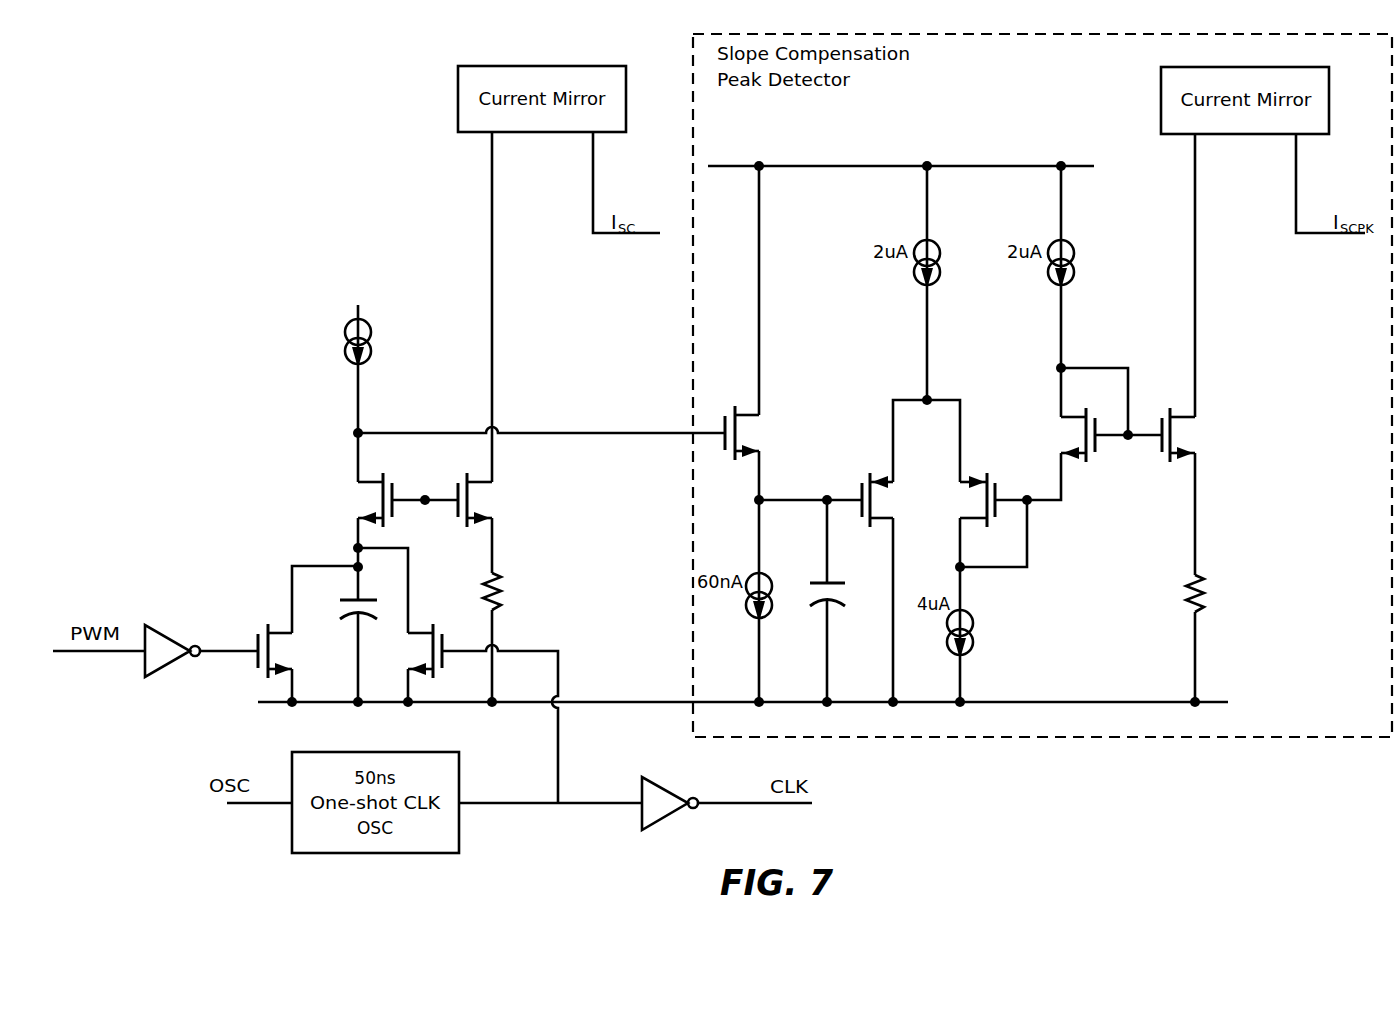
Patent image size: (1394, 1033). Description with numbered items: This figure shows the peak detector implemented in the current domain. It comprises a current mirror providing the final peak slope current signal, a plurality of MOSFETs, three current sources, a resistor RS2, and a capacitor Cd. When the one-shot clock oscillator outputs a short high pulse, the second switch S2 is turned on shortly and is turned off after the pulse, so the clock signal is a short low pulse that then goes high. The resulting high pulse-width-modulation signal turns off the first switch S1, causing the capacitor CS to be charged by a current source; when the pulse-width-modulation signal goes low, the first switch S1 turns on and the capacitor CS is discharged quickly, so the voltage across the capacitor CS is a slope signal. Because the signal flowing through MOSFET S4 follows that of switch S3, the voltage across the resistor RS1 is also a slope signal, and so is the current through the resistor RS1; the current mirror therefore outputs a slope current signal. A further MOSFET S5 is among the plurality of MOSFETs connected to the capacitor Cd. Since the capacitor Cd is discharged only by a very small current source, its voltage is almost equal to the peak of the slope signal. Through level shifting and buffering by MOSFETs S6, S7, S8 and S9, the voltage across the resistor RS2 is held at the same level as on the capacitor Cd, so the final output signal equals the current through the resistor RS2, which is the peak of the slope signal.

The first switch S1 is at (262, 649).
The second switch S2 is at (415, 651).
The switch S3 is at (366, 500).
The MOSFET S4 is at (484, 500).
The MOSFET S5 is at (751, 433).
The MOSFET S6 is at (882, 500).
The MOSFET S7 is at (972, 500).
The MOSFET S8 is at (1066, 435).
The MOSFET S9 is at (1189, 435).
The capacitor CS is at (349, 634).
The capacitor Cd is at (831, 591).
The resistor RS1 is at (508, 596).
The resistor RS2 is at (1211, 593).